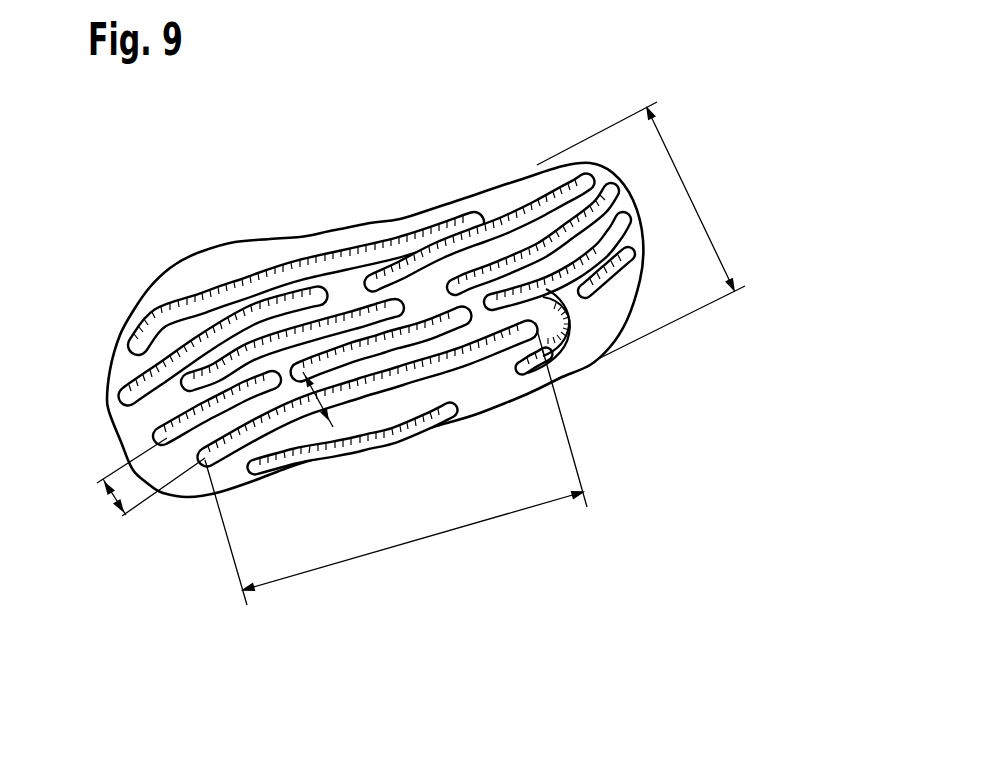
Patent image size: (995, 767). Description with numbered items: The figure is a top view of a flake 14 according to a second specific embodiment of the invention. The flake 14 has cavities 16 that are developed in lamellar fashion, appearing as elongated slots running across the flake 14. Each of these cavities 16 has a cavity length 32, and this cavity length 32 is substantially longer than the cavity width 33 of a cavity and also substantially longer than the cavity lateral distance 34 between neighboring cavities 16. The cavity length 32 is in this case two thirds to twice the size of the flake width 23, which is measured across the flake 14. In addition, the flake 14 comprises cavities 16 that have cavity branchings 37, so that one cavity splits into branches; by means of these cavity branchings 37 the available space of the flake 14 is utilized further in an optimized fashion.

The flake 14 is at (712, 74).
The cavities 16 is at (478, 210).
The flake width 23 is at (690, 198).
The cavity length 32 is at (410, 546).
The cavity width 33 is at (316, 393).
The cavity lateral distance 34 is at (113, 500).
The cavity branchings 37 is at (557, 288).